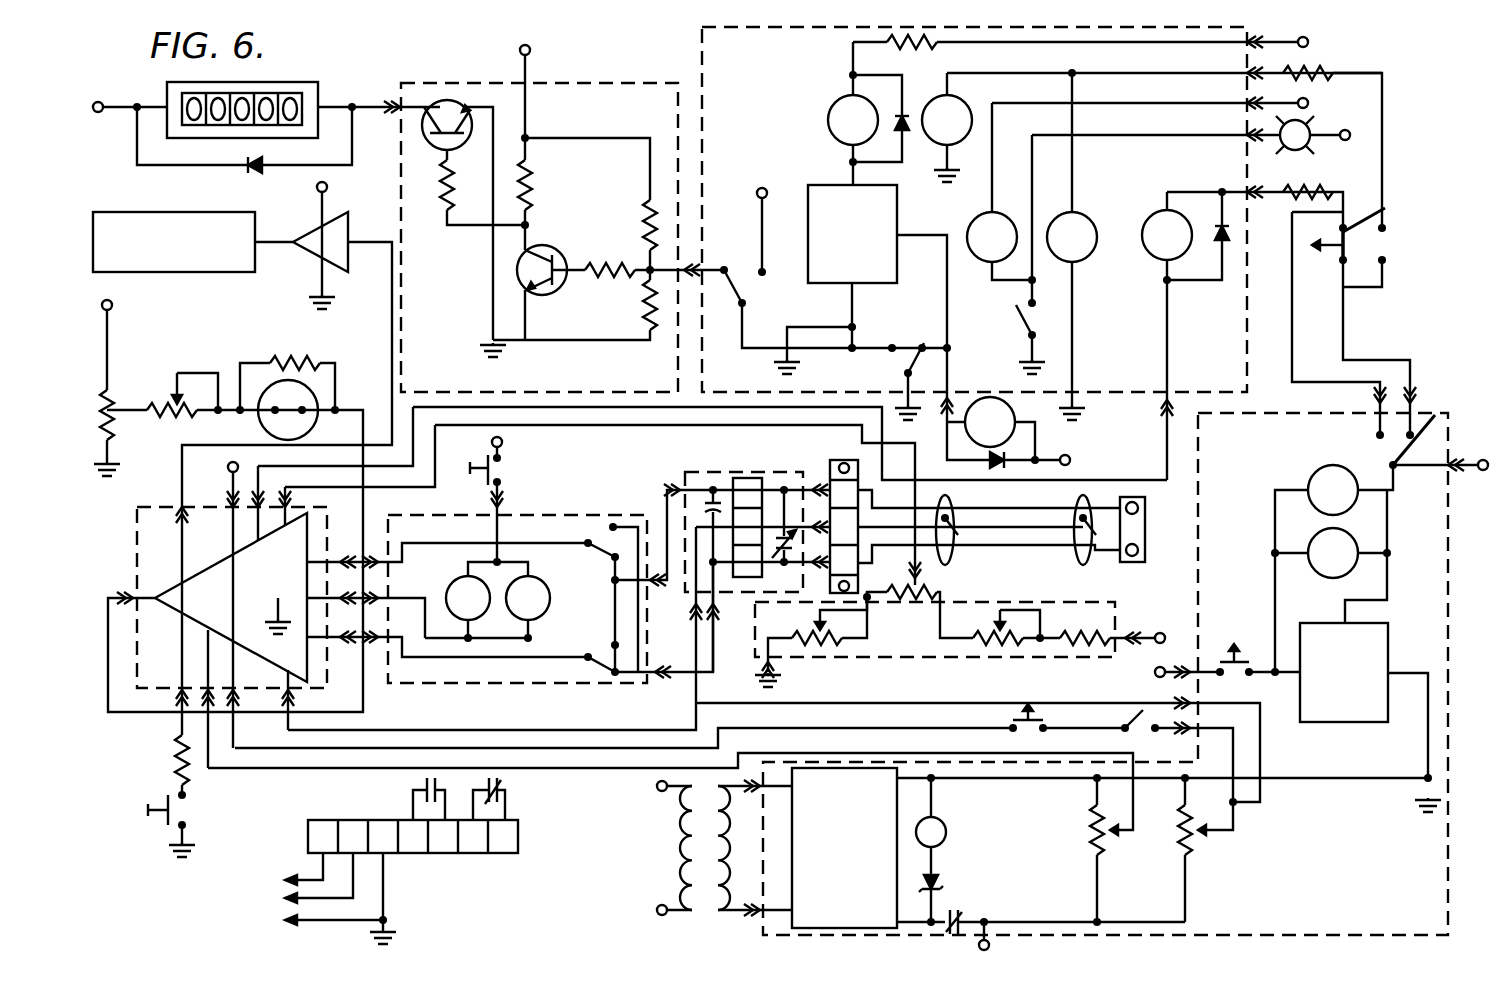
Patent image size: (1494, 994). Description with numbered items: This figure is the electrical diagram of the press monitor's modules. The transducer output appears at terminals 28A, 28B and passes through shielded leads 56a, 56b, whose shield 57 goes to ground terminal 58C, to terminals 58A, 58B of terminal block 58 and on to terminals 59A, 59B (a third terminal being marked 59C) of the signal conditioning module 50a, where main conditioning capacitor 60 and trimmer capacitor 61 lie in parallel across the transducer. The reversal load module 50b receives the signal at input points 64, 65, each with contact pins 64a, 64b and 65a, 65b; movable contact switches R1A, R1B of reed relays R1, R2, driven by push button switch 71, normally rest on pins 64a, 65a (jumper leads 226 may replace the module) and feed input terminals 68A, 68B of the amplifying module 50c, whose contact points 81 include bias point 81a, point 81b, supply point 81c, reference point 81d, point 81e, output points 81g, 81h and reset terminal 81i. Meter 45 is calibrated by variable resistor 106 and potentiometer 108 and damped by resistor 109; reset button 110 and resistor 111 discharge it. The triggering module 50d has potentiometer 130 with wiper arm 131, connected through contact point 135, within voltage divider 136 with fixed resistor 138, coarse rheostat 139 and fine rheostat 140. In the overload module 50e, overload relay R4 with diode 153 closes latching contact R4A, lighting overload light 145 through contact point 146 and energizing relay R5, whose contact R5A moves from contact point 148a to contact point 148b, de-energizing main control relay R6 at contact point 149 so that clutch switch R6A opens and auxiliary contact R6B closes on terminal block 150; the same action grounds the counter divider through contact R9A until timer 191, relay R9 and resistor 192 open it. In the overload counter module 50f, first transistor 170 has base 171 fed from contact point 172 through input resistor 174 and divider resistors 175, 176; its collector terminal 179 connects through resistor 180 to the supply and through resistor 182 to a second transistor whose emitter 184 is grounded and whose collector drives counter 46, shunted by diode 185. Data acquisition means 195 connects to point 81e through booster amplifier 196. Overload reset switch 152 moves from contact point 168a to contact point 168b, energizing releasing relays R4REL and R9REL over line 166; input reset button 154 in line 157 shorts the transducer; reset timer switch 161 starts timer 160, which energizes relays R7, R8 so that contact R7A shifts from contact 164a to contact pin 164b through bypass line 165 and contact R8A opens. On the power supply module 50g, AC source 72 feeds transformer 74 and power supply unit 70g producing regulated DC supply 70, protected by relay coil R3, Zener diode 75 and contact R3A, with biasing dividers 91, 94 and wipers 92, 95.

The counter display 46 is at (310, 88).
The +70 supply 70 is at (263, 116).
The diode 185 is at (250, 178).
The data acquisition means 195 is at (170, 210).
The amplifier 196 is at (314, 264).
The circuit block 50f is at (624, 82).
The transistor 184 is at (462, 112).
The resistor 182 is at (420, 100).
The resistor 180 is at (531, 184).
The resistor 175 is at (648, 214).
The resistor 176 is at (644, 306).
The transistor 171 is at (568, 256).
The transistor collector 179 is at (520, 258).
The transistor emitter 170 is at (528, 284).
The resistor 174 is at (626, 262).
The circuit block 50e is at (702, 60).
The switch 172 is at (724, 262).
The relay contact R9A is at (826, 309).
The timer 191 is at (897, 212).
The contact 148b is at (894, 344).
The contact 148a is at (926, 344).
The relay contact R5A is at (902, 378).
The line 149 is at (944, 404).
The relay R6 is at (1026, 433).
The relay R9 is at (868, 113).
The resistor 192 is at (910, 48).
The relay release coil R9REL is at (1152, 124).
The relay R5 is at (1161, 185).
The relay release coil R4REL is at (1072, 246).
The relay contact R4A is at (1015, 254).
The line 146 is at (1246, 140).
The lamp 145 is at (1294, 152).
The line 166 is at (1396, 166).
The relay R4 is at (1242, 332).
The diode 153 is at (1218, 250).
The relay contact 152 is at (1384, 226).
The contact 168b is at (1386, 258).
The contact 168a is at (1342, 264).
The line 165 is at (1292, 354).
The circuit block 50g is at (1450, 592).
The contact 164b is at (1378, 438).
The contact 164a is at (1438, 414).
The relay contact R7A is at (1390, 462).
The relay R7 is at (1334, 568).
The relay R8 is at (1331, 553).
The timer 160 is at (1392, 632).
The pushbutton switch 161 is at (1248, 648).
The line 157 is at (859, 706).
The pushbutton switch 154 is at (1003, 718).
The relay contact R8A is at (1120, 724).
The potentiometer 91 is at (1088, 830).
The wiper 92 is at (1126, 838).
The potentiometer 94 is at (1180, 840).
The wiper 95 is at (1216, 838).
The relay R3 is at (940, 826).
The zener diode 75 is at (936, 880).
The capacitor contact R3A is at (960, 910).
The power supply 70g is at (844, 848).
The transformer 72 is at (652, 908).
The transformer secondary 74 is at (692, 916).
The circuit block 50b is at (462, 686).
The pushbutton switch 71 is at (504, 456).
The relay R1 is at (487, 600).
The relay R2 is at (428, 609).
The relay contact R1A is at (588, 538).
The contact blade 226 is at (593, 560).
The relay contact R1B is at (588, 650).
The contact 64a is at (610, 566).
The line 64 is at (611, 584).
The contact 64b is at (620, 650).
The contact 65b is at (614, 522).
The contact 65a is at (614, 678).
The line 65 is at (646, 688).
The circuit block 50a is at (714, 470).
The line 60 is at (692, 486).
The component 59A is at (745, 480).
The variable capacitor 59C is at (776, 484).
The line 59B is at (742, 582).
The line 61 is at (782, 582).
The line 58C is at (889, 526).
The connector 58A is at (860, 470).
The line 58 is at (862, 502).
The line 58B is at (868, 572).
The cable 56a is at (1018, 502).
The cable 56b is at (970, 558).
The cable 57 is at (1084, 566).
The +28 connector 28A is at (1159, 529).
The -28 connector 28B is at (1157, 551).
The circuit block 50d is at (890, 652).
The potentiometer 131 is at (929, 606).
The junction 135 is at (870, 602).
The wiper 130 is at (916, 604).
The potentiometer 140 is at (796, 646).
The line 136 is at (944, 648).
The potentiometer 139 is at (989, 648).
The resistor 138 is at (1072, 648).
The resistor 108 is at (112, 402).
The potentiometer 106 is at (154, 428).
The resistor 109 is at (294, 360).
The sensor 45 is at (262, 420).
The circuit block 50c is at (136, 530).
The amplifier 81 is at (231, 597).
The amplifier input 81e is at (182, 582).
The amplifier input 81a is at (208, 630).
The amplifier input 81b is at (234, 638).
The amplifier input 81c is at (258, 552).
The amplifier input 81h is at (262, 552).
The amplifier input 81g is at (286, 526).
The amplifier input 81i is at (180, 622).
The amplifier input 81d is at (288, 678).
The output 68A is at (278, 588).
The output 68B is at (282, 648).
The resistor 111 is at (178, 752).
The pushbutton switch 110 is at (162, 818).
The terminal strip 150 is at (484, 854).
The relay contact R6A is at (414, 800).
The relay contact R6B is at (504, 797).